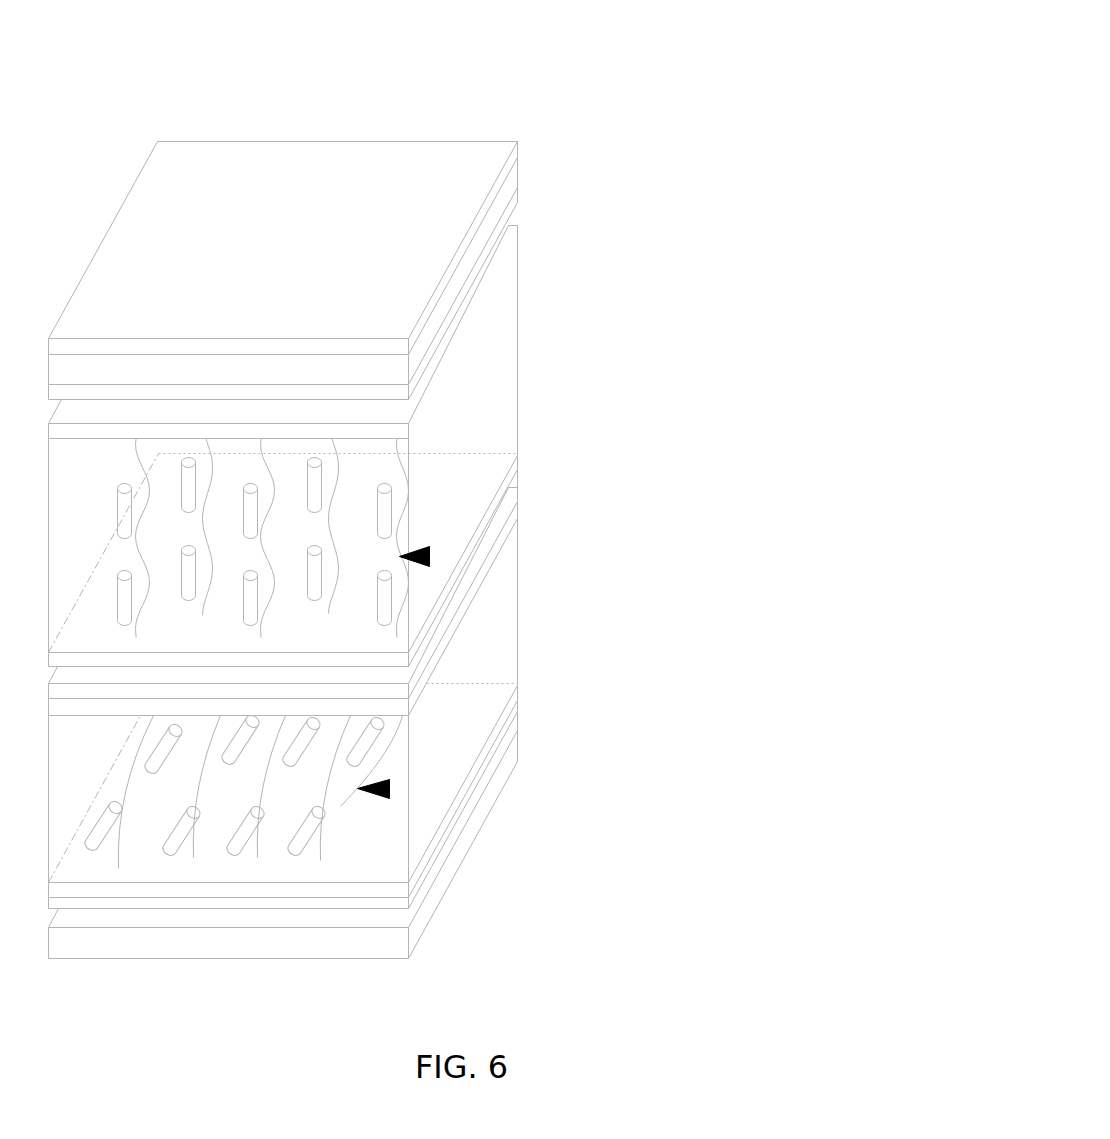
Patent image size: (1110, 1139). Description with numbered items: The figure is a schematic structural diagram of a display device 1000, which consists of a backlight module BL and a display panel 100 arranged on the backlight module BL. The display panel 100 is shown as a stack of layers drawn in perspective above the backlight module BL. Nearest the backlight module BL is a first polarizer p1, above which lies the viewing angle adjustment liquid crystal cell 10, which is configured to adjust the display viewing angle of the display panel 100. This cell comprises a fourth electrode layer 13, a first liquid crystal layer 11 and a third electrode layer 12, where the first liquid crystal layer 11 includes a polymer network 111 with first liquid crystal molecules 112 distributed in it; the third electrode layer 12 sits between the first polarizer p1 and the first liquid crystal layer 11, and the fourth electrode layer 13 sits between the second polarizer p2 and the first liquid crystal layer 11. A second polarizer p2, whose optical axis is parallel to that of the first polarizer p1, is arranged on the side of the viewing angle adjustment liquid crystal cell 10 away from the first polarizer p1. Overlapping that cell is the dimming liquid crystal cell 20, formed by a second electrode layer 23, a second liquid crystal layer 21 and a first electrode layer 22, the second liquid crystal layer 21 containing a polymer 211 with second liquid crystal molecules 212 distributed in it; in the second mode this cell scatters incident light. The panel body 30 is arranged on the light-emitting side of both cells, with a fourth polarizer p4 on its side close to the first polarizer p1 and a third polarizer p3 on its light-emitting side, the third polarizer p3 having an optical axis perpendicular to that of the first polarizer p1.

The display device 1000 is at (677, 91).
The display panel 100 is at (733, 197).
The third polarizer p3 is at (478, 218).
The panel body 30 is at (458, 277).
The fourth polarizer p4 is at (432, 352).
The dimming liquid crystal cell 20 is at (678, 373).
The first electrode layer 22 is at (433, 387).
The second liquid crystal layer 21 is at (615, 468).
The second liquid crystal molecules 212 is at (389, 503).
The polymer 211 is at (429, 557).
The second electrode layer 23 is at (453, 577).
The viewing angle adjustment liquid crystal cell 10 is at (655, 647).
The second polarizer p2 is at (448, 620).
The third electrode layer 12 is at (428, 671).
The first liquid crystal layer 11 is at (595, 703).
The first liquid crystal molecules 112 is at (370, 740).
The polymer network 111 is at (389, 788).
The fourth electrode layer 13 is at (428, 850).
The first polarizer p1 is at (413, 891).
The backlight module BL is at (417, 932).